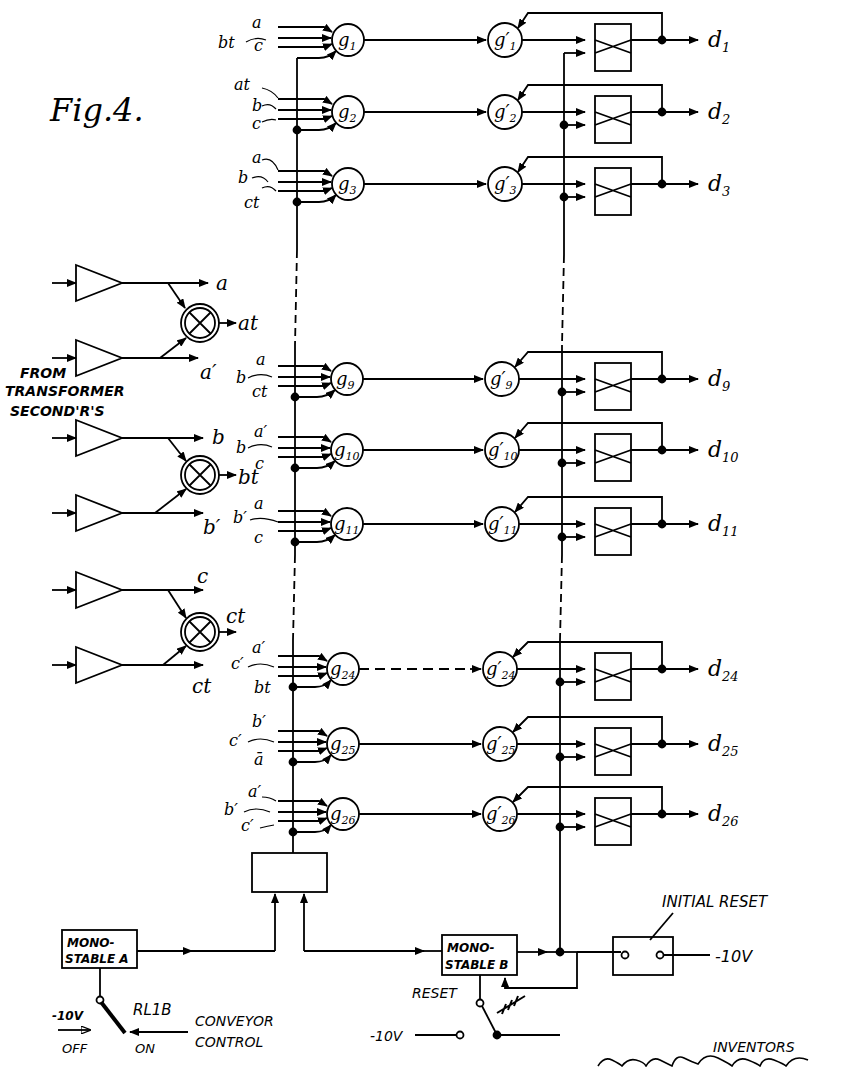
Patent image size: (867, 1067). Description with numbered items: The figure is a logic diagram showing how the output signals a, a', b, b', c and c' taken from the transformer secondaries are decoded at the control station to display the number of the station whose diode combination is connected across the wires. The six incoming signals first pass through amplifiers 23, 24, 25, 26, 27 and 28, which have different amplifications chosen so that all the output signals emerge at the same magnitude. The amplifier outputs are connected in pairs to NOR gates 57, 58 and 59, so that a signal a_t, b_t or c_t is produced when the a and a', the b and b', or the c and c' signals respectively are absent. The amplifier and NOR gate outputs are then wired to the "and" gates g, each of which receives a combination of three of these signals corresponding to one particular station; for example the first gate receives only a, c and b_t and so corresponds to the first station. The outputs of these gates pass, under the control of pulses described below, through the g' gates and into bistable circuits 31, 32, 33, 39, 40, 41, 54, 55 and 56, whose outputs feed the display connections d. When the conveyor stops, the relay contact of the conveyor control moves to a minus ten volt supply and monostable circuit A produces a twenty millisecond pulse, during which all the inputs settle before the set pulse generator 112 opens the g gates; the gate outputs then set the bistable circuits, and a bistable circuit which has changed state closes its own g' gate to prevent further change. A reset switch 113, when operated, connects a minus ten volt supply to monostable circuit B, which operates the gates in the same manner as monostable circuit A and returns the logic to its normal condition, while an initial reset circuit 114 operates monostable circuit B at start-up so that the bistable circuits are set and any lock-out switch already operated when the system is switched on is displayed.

The amplifier 23 is at (90, 283).
The amplifier 24 is at (90, 358).
The amplifier 25 is at (90, 438).
The amplifier 26 is at (90, 513).
The amplifier 27 is at (90, 590).
The amplifier 28 is at (90, 665).
The NOR gate 57 is at (216, 310).
The NOR gate 58 is at (181, 483).
The NOR gate 59 is at (211, 618).
The bistable circuit 31 is at (631, 57).
The bistable circuit 32 is at (631, 129).
The bistable circuit 33 is at (631, 201).
The bistable circuit 39 is at (631, 396).
The bistable circuit 40 is at (631, 467).
The bistable circuit 41 is at (631, 541).
The bistable circuit 54 is at (631, 686).
The bistable circuit 55 is at (631, 761).
The bistable circuit 56 is at (631, 831).
The set pulse generator 112 is at (328, 865).
The reset switch 113 is at (492, 1059).
The initial reset circuit 114 is at (652, 977).